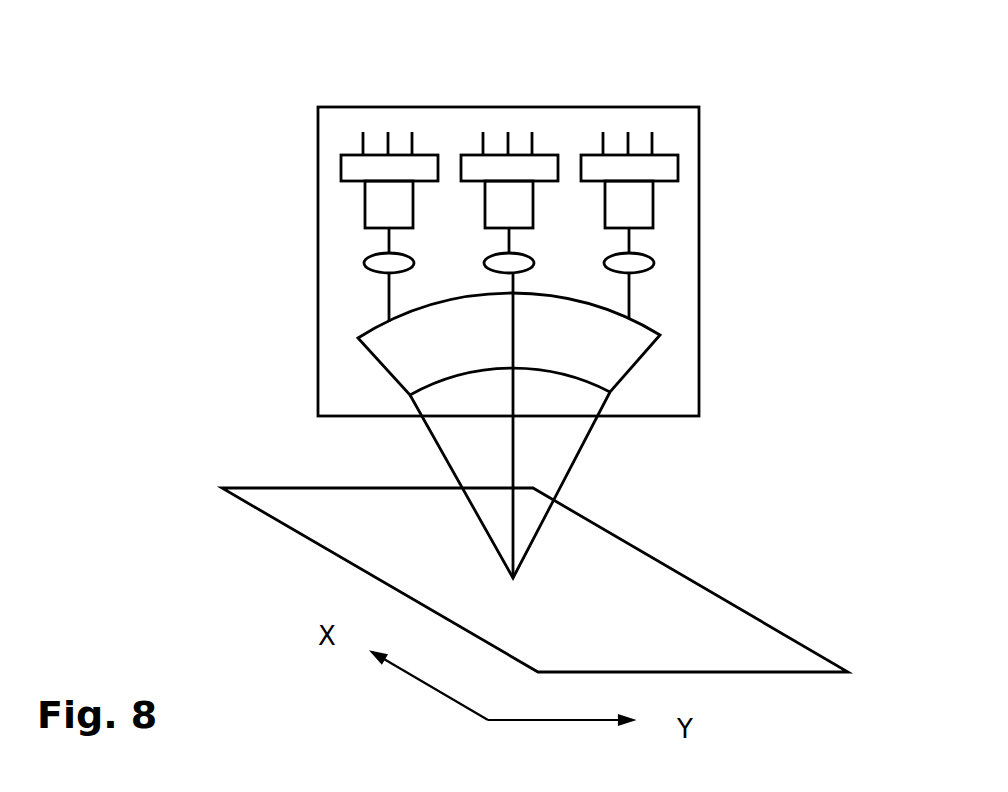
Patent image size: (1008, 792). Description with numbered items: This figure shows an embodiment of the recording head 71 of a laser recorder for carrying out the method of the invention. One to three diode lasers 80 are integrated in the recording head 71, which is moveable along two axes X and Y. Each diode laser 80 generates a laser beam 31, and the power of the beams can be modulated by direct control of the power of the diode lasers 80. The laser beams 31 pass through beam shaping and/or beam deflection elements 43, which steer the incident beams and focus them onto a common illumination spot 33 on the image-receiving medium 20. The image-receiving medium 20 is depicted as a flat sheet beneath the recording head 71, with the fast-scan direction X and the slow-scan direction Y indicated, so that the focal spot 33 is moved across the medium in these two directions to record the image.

The recording head 71 is at (697, 107).
The diode laser 80 is at (503, 205).
The laser beam 31 is at (630, 295).
The beam shaping and/or beam deflection elements 43 is at (600, 362).
The focal spot 33 is at (513, 578).
The image-receiving medium 20 is at (717, 625).